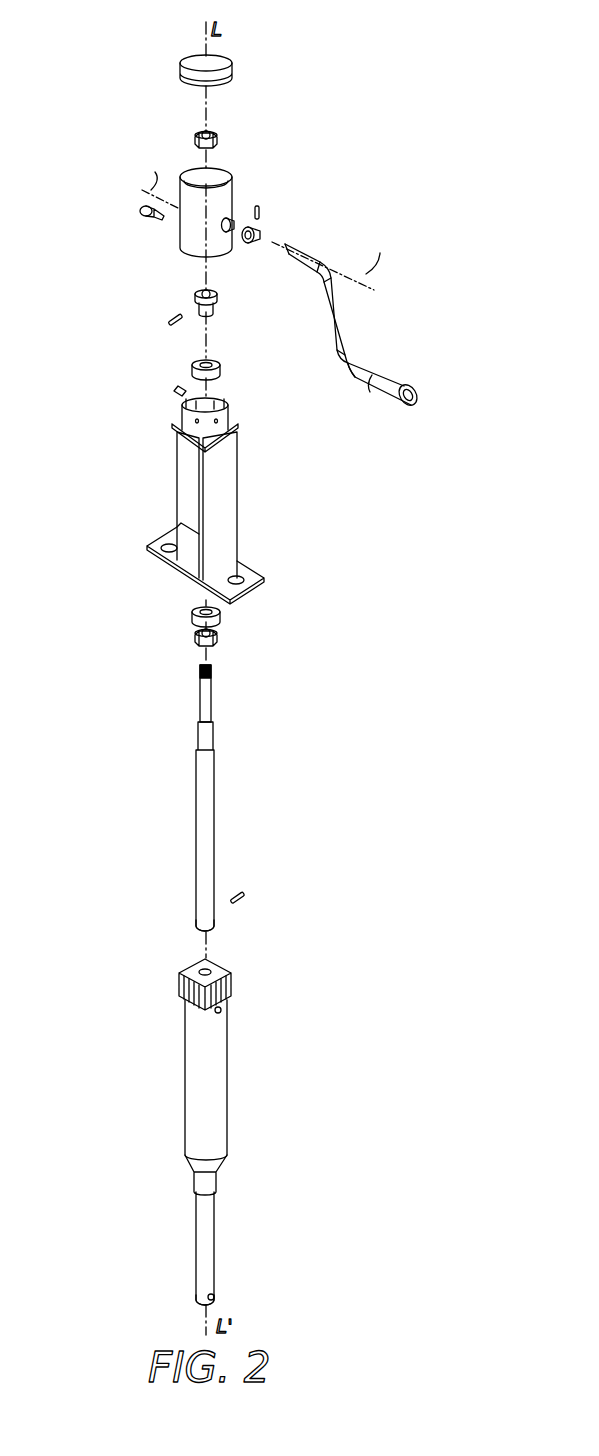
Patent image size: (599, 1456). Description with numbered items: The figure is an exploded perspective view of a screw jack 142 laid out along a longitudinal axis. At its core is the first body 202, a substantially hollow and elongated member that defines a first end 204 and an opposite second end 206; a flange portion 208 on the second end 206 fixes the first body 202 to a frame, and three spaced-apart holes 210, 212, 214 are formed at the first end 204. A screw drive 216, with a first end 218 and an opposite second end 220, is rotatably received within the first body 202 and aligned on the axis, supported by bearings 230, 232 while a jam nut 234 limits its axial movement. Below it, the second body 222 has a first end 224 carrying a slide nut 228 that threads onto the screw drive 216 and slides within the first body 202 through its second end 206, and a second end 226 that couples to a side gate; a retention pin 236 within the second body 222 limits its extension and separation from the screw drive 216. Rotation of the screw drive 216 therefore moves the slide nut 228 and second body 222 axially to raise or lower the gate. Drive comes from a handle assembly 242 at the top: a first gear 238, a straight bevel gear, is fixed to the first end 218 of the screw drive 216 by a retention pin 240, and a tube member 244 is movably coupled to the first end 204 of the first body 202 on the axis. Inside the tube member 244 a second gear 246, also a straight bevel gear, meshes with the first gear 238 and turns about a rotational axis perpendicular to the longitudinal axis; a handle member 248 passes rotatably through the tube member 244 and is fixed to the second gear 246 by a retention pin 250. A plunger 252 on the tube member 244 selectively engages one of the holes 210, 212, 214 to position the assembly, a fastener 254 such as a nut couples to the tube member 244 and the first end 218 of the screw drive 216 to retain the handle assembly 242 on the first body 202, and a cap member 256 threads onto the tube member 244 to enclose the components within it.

The screw jack 142 is at (416, 64).
The first body 202 is at (220, 496).
The first end 204 is at (160, 408).
The second end 206 is at (150, 570).
The flange portion 208 is at (268, 578).
The hole 210 is at (172, 427).
The hole 212 is at (229, 418).
The hole 214 is at (183, 392).
The screw drive 216 is at (198, 802).
The first end 218 is at (182, 700).
The second end 220 is at (182, 926).
The second body 222 is at (216, 1092).
The first end 224 is at (164, 982).
The second end 226 is at (184, 1299).
The slide nut 228 is at (233, 982).
The bearing 230 is at (220, 366).
The bearing 232 is at (222, 617).
The jam nut 234 is at (218, 640).
The retention pin 236 is at (245, 898).
The first gear 238 is at (196, 292).
The retention pin 240 is at (168, 323).
The handle assembly 242 is at (276, 177).
The tube member 244 is at (227, 175).
The second gear 246 is at (250, 245).
The handle member 248 is at (342, 318).
The retention pin 250 is at (262, 212).
The plunger 252 is at (140, 211).
The fastener 254 is at (196, 139).
The cap member 256 is at (181, 70).